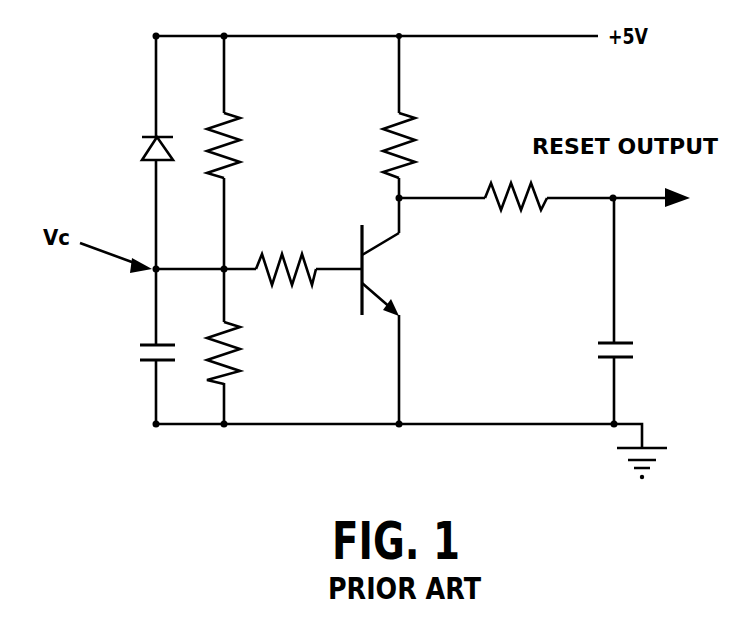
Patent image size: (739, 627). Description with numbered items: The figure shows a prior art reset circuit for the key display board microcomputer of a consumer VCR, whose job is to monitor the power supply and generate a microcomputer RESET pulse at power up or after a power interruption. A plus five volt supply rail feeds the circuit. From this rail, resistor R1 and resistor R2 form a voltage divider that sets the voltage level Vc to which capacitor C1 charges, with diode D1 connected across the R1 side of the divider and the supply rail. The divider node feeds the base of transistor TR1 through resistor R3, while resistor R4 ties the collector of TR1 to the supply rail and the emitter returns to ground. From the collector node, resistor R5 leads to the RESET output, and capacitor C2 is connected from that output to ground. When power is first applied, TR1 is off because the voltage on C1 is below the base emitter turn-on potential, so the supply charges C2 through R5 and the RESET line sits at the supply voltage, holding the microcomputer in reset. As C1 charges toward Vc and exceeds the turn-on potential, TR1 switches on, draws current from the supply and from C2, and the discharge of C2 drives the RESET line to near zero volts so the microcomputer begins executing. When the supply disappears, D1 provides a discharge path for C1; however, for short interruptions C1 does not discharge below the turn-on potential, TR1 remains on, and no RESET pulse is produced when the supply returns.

The diode D1 is at (109, 152).
The voltage divider resistor R1 is at (261, 145).
The voltage divider resistor R2 is at (264, 352).
The base resistor R3 is at (286, 242).
The collector resistor R4 is at (437, 145).
The charging resistor R5 is at (516, 224).
The capacitor C1 is at (119, 346).
The capacitor C2 is at (574, 345).
The transistor TR1 is at (400, 270).